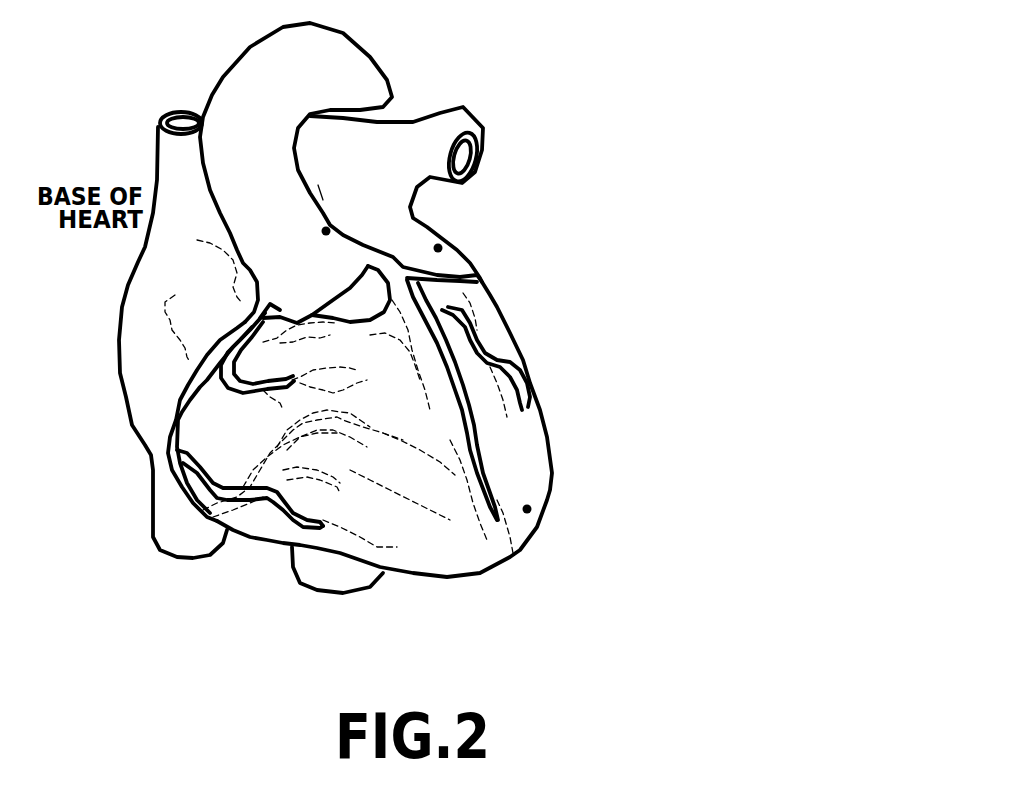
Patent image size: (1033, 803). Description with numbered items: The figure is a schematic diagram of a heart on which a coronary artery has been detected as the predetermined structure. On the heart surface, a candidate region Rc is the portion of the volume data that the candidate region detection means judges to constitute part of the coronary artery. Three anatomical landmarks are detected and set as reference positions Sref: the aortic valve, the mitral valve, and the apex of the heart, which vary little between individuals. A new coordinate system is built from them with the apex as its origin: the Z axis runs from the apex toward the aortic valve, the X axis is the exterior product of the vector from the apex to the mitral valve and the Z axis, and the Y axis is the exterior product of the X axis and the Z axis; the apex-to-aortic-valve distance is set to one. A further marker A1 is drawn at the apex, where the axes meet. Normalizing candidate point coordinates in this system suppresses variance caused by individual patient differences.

The reference position Sref is at (328, 228).
The candidate region Rc is at (228, 331).
The apex axis A1 is at (527, 509).
The X axis X is at (375, 605).
The Y axis Y is at (571, 380).
The Z axis Z is at (527, 509).